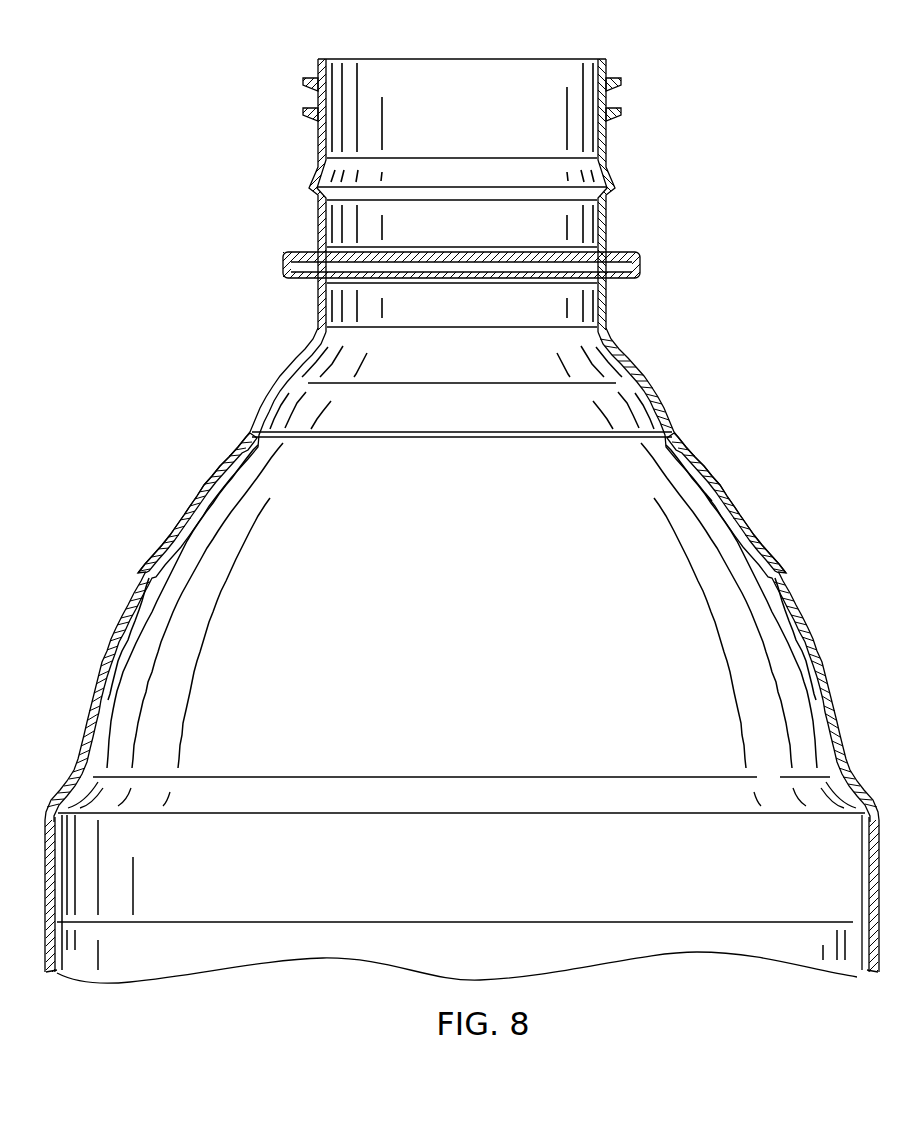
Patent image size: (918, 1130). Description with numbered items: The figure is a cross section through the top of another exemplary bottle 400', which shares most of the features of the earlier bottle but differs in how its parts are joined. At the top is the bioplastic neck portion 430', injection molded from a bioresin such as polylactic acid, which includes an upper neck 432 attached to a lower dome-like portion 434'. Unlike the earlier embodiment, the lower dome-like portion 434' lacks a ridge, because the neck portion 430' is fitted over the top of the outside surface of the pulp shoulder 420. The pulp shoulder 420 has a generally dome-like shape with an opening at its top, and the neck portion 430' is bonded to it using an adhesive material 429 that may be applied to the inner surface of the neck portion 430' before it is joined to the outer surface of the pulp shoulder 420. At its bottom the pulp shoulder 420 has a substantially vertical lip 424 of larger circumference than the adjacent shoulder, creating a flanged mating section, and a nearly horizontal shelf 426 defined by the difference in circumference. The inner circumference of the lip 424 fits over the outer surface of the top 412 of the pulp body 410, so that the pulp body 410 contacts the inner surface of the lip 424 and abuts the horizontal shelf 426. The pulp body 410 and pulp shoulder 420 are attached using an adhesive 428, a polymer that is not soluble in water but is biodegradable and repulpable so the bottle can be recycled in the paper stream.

The bottle 400' is at (462, 527).
The pulp body 410 is at (60, 947).
The top of the pulp body 412 is at (858, 900).
The pulp shoulder 420 is at (127, 600).
The lip 424 is at (868, 838).
The shelf 426 is at (852, 790).
The adhesive 428 is at (863, 870).
The adhesive material 429 is at (707, 490).
The bioplastic neck portion 430' is at (462, 561).
The neck 432 is at (607, 230).
The lower dome-like portion 434' is at (747, 490).